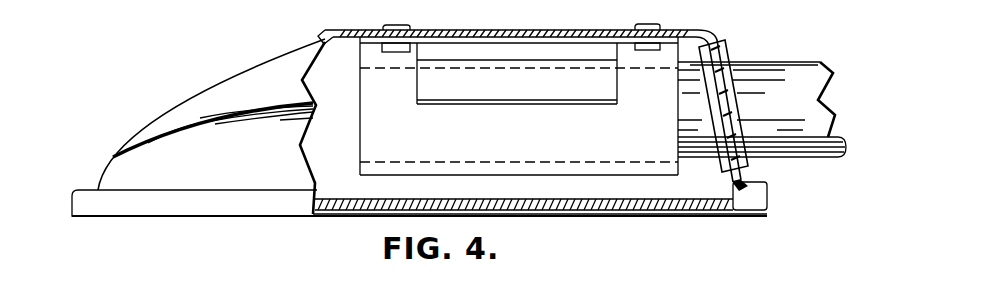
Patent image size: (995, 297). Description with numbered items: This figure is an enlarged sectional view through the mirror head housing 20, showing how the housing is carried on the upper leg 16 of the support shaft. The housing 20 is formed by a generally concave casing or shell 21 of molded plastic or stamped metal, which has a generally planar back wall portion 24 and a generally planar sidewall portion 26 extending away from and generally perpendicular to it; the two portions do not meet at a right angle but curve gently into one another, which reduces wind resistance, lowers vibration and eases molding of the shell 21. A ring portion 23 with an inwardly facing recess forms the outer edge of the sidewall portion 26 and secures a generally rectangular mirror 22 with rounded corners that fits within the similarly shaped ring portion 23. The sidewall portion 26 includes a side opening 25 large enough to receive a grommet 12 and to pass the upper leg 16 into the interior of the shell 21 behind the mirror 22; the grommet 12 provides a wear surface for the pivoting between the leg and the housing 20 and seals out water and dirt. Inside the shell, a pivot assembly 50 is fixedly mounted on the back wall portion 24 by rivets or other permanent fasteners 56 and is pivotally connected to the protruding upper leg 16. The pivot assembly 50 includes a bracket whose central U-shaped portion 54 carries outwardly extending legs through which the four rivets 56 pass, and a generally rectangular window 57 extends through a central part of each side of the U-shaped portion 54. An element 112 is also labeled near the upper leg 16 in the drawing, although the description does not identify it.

The mirror head housing 20 is at (225, 68).
The shell 21 is at (326, 34).
The sidewall portion 26 is at (207, 83).
The back wall portion 24 is at (556, 31).
The side opening 25 is at (737, 41).
The rivets 56 is at (410, 28).
The U-shaped portion 54 is at (633, 137).
The pivot assembly 50 is at (361, 184).
The window 57 is at (617, 92).
The mirror 22 is at (543, 201).
The ring portion 23 is at (768, 202).
The grommet 12 is at (733, 53).
The rail top surface 112 is at (804, 57).
The upper leg 16 is at (823, 65).